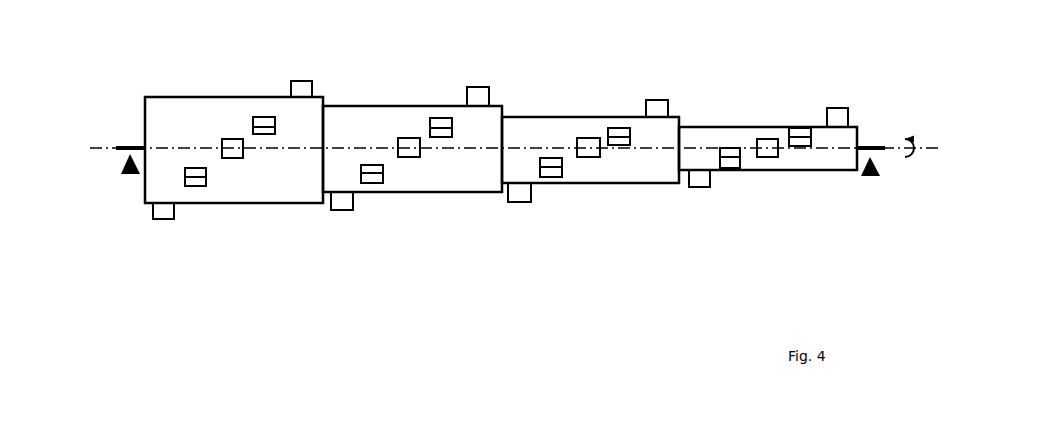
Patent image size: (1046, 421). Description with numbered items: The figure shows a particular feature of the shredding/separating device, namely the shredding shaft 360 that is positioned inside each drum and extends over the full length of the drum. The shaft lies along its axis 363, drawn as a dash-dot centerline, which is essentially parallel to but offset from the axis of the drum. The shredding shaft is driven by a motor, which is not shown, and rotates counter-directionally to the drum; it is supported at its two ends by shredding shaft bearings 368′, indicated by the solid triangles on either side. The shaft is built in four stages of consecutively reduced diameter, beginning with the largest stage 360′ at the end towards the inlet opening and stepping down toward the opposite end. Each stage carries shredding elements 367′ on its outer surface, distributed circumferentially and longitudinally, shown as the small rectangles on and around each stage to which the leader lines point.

The shredding shaft 360 is at (450, 177).
The first stage of the shredding shaft 360′ is at (234, 177).
The axis of the shredding shaft 363 is at (95, 149).
The shredding elements 367′ is at (306, 95).
The shredding shaft bearing 368′ is at (120, 168).